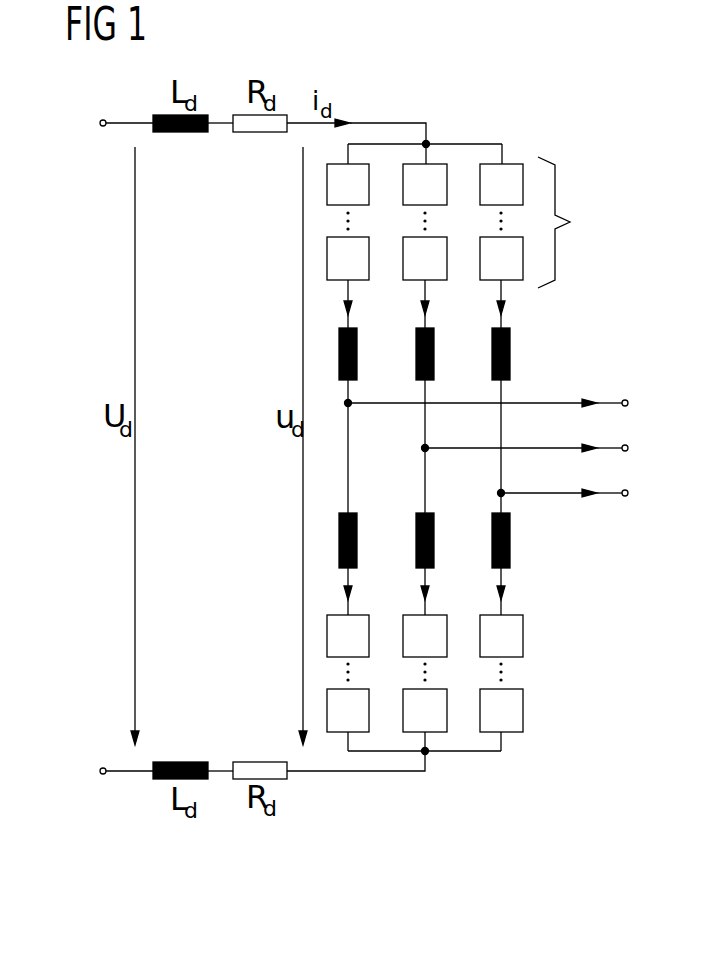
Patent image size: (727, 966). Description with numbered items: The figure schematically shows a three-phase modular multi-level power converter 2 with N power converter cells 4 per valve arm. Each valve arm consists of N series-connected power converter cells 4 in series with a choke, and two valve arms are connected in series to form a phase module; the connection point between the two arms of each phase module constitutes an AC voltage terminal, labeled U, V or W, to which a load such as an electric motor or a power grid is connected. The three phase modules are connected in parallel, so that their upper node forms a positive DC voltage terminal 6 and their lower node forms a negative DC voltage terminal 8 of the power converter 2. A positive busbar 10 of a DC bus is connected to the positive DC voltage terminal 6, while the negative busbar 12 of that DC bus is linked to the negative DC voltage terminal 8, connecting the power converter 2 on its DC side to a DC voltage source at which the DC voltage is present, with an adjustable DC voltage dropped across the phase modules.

The three-phase modular multi-level power converter 2 is at (502, 88).
The power converter cell 4 is at (512, 160).
The positive DC voltage terminal 6 is at (427, 143).
The negative DC voltage terminal 8 is at (425, 751).
The positive busbar 10 is at (378, 123).
The negative busbar 12 is at (377, 775).